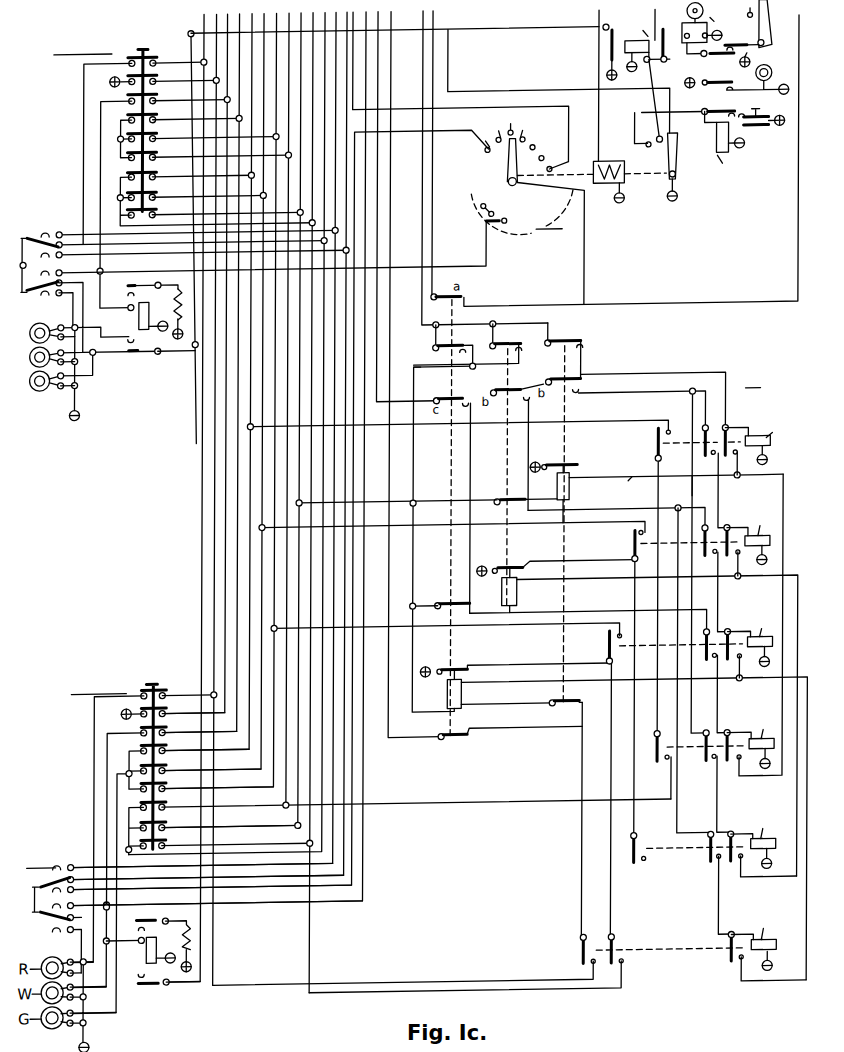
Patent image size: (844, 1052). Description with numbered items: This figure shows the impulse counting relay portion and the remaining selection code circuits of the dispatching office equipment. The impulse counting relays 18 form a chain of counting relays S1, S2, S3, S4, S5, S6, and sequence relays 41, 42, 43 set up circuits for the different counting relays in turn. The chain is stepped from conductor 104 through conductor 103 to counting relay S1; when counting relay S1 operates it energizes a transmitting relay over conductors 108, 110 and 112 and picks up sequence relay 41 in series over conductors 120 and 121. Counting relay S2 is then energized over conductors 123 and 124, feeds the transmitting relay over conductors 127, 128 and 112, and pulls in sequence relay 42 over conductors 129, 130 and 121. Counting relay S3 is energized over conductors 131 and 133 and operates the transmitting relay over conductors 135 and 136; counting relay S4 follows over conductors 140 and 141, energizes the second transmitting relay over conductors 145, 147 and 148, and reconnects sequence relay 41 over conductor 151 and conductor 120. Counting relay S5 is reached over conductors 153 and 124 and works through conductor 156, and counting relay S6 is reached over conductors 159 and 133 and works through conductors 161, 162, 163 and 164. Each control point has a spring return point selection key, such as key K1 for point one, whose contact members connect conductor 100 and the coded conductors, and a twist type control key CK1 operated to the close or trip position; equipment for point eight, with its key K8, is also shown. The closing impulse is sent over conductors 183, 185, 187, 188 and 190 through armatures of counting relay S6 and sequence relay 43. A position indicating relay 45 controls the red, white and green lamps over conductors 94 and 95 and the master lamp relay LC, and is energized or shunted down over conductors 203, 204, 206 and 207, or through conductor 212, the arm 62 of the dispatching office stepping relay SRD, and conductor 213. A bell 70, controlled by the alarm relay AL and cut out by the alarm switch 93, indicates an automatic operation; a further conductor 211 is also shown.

The conductor 94 is at (195, 441).
The conductor 95 is at (512, 29).
The conductor 100 is at (226, 556).
The conductor 103 is at (654, 376).
The conductor 104 is at (410, 385).
The conductor 108 is at (597, 424).
The conductor 110 is at (247, 381).
The conductor 112 is at (337, 865).
The conductor 120 is at (617, 487).
The conductor 121 is at (421, 502).
The conductor 123 is at (718, 495).
The conductor 124 is at (629, 396).
The conductor 127 is at (606, 522).
The conductor 128 is at (256, 766).
The conductor 129 is at (616, 582).
The conductor 130 is at (413, 557).
The conductor 131 is at (718, 598).
The conductor 133 is at (618, 515).
The conductor 135 is at (527, 628).
The conductor 136 is at (256, 784).
The conductor 140 is at (718, 698).
The conductor 141 is at (578, 616).
The conductor 145 is at (327, 842).
The conductor 147 is at (256, 803).
The conductor 148 is at (650, 480).
The conductor 151 is at (777, 783).
The conductor 153 is at (692, 491).
The conductor 156 is at (505, 829).
The conductor 159 is at (683, 795).
The conductor 161 is at (520, 666).
The conductor 162 is at (613, 893).
The conductor 163 is at (522, 990).
The conductor 164 is at (256, 841).
The conductor 183 is at (345, 44).
The conductor 185 is at (95, 714).
The conductor 187 is at (262, 986).
The conductor 188 is at (583, 856).
The conductor 190 is at (378, 322).
The conductor 203 is at (108, 790).
The conductor 204 is at (236, 576).
The conductor 206 is at (432, 228).
The conductor 207 is at (670, 307).
The conductor 211 is at (597, 16).
The conductor 212 is at (367, 897).
The conductor 213 is at (584, 252).
The impulse counting relays 18 is at (755, 381).
The sequence relay 41 is at (540, 485).
The sequence relay 42 is at (518, 593).
The sequence relay 43 is at (462, 695).
The position indicating relay 45 is at (148, 950).
The arm 62 is at (506, 180).
The bell 70 is at (708, 28).
The alarm switch 93 is at (754, 44).
The counting relay S1 is at (719, 443).
The counting relay S2 is at (697, 540).
The counting relay S3 is at (684, 644).
The counting relay S4 is at (710, 745).
The counting relay S5 is at (699, 845).
The counting relay S6 is at (673, 942).
The relay K8 is at (150, 50).
The point selection key K1 is at (154, 680).
The control key CK1 is at (194, 910).
The lamp relay LC is at (640, 105).
The alarm relay AL is at (712, 142).
The stepping relay SRD is at (568, 172).